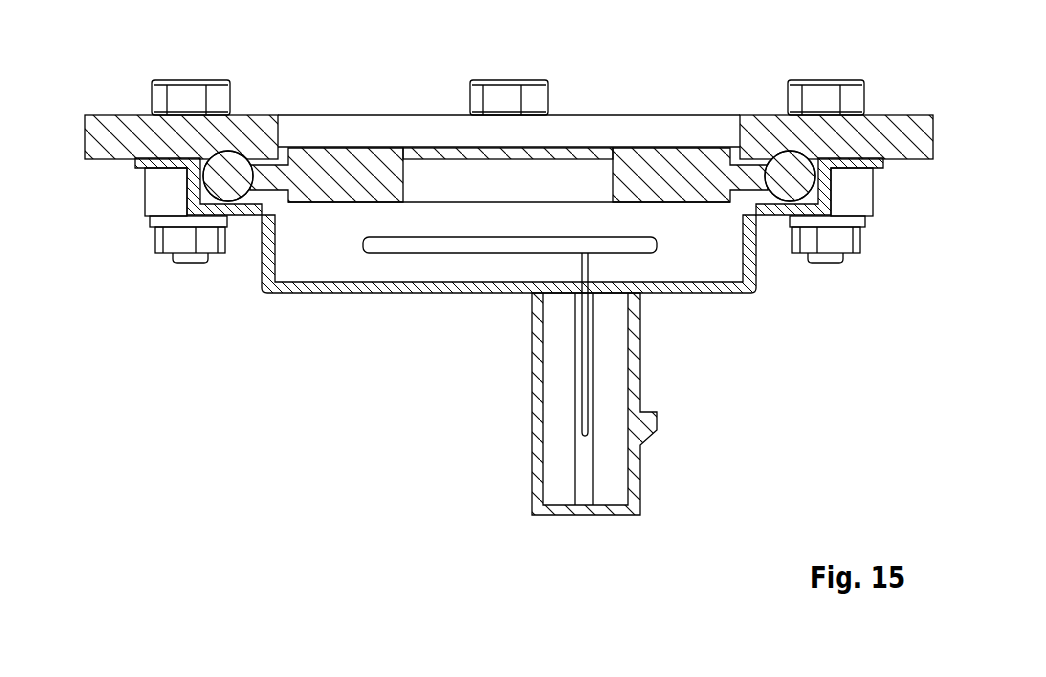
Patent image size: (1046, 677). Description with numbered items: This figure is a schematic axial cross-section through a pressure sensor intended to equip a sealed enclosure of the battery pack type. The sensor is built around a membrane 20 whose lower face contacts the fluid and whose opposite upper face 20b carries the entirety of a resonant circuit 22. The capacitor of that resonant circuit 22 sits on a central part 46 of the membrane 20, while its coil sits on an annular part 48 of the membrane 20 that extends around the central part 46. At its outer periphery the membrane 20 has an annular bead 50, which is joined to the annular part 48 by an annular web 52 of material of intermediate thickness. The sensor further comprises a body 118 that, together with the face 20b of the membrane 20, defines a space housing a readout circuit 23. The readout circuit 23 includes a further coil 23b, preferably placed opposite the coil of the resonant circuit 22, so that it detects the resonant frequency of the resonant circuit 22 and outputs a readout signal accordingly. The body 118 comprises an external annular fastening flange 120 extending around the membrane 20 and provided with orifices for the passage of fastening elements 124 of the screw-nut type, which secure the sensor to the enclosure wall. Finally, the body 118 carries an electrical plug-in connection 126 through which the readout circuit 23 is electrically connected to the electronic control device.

The membrane 20 is at (525, 222).
The upper face of the membrane 20b is at (485, 220).
The resonant circuit 22 is at (597, 137).
The readout circuit 23 is at (497, 336).
The further coil 23b is at (408, 247).
The central part of the membrane 46 is at (427, 155).
The annular part of the membrane 48 is at (342, 190).
The annular bead 50 is at (742, 176).
The annular web 52 is at (797, 175).
The body 118 is at (260, 302).
The external annular fastening flange 120 is at (143, 202).
The fastening elements 124 is at (163, 253).
The electrical plug-in connection 126 is at (640, 492).